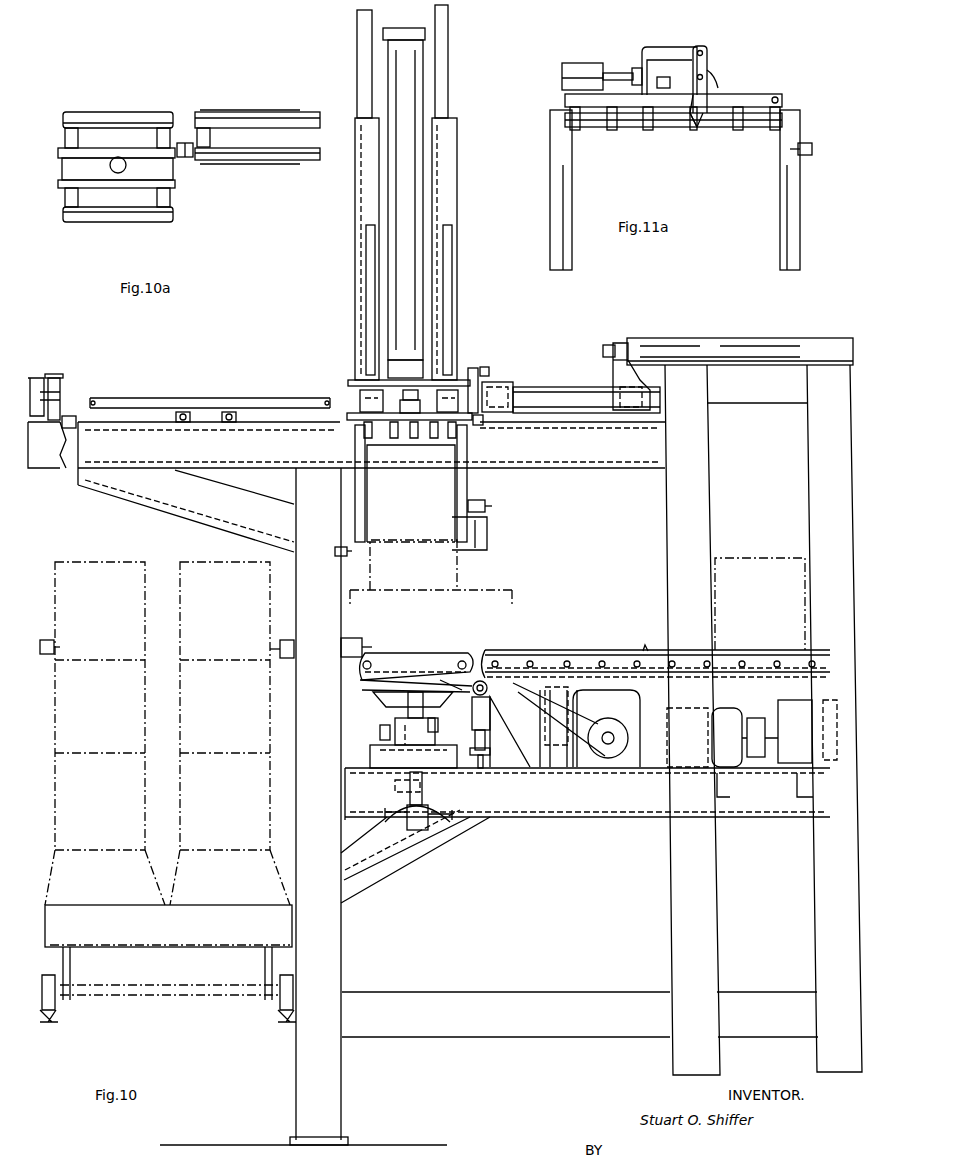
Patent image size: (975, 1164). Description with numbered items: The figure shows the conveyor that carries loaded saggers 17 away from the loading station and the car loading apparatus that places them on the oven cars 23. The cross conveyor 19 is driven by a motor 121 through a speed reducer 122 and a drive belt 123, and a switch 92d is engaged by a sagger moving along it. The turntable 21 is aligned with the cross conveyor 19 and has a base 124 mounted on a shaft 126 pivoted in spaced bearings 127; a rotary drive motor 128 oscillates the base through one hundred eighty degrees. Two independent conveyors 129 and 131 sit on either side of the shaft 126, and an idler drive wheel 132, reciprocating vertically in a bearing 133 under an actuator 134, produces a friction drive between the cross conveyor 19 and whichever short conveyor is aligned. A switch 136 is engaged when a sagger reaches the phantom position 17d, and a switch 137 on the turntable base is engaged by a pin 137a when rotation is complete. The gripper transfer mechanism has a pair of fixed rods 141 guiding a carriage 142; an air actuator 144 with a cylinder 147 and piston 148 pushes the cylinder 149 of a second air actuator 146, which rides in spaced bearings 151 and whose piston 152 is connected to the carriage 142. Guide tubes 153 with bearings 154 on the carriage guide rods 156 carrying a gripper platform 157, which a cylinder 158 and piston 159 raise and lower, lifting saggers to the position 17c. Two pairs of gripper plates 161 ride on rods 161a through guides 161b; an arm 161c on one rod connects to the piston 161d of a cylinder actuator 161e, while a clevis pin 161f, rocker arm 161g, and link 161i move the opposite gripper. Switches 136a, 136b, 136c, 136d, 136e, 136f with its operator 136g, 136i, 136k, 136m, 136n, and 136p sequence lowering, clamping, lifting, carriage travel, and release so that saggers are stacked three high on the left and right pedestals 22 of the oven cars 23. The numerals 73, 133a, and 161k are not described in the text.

In FIG. 10, the sagger 17 is at (752, 560).
In FIG. 10, the sagger raised position 17c is at (428, 523).
In FIG. 10, the sagger phantom position 17d is at (458, 575).
In FIG. 10a, the cross conveyor 19 is at (245, 125).
In FIG. 10, the cross conveyor 19 is at (572, 650).
In FIG. 10a, the turntable 21 is at (85, 228).
In FIG. 10, the turntable 21 is at (475, 652).
In FIG. 10, the pedestal 22 is at (178, 850).
In FIG. 10, the oven car 23 is at (153, 938).
In FIG. 10, the motor 73 is at (730, 710).
In FIG. 10, the switch 92d is at (646, 645).
In FIG. 10, the motor 121 is at (632, 702).
In FIG. 10, the speed reducer 122 is at (605, 758).
In FIG. 10, the drive belt 123 is at (588, 765).
In FIG. 10, the base 124 is at (382, 702).
In FIG. 10a, the shaft 126 is at (123, 165).
In FIG. 10, the shaft 126 is at (422, 795).
In FIG. 10, the bearings 127 is at (438, 725).
In FIG. 10, the rotary drive motor 128 is at (430, 812).
In FIG. 10a, the conveyor 129 is at (128, 150).
In FIG. 10a, the conveyor 131 is at (150, 182).
In FIG. 10, the conveyor 131 is at (358, 668).
In FIG. 10a, the idler drive wheel 132 is at (190, 160).
In FIG. 10, the idler drive wheel 132 is at (487, 690).
In FIG. 10, the bearing 133 is at (490, 712).
In FIG. 10, the beam 133a is at (347, 412).
In FIG. 10, the actuator 134 is at (490, 752).
In FIG. 10, the switch 136 is at (372, 648).
In FIG. 10, the switch 136a is at (335, 551).
In FIG. 11a, the switch 136b is at (665, 78).
In FIG. 10, the switch 136c is at (478, 425).
In FIG. 10, the switch 136d is at (47, 640).
In FIG. 10, the switch 136e is at (55, 378).
In FIG. 10, the switch 136f is at (486, 504).
In FIG. 10, the operator 136g is at (487, 536).
In FIG. 10, the switch 136i is at (76, 425).
In FIG. 10, the switch 136k is at (183, 422).
In FIG. 10, the switch 136m is at (232, 422).
In FIG. 10, the switch 136n is at (280, 645).
In FIG. 10, the switch 136p is at (489, 370).
In FIG. 10, the switch 137 is at (380, 735).
In FIG. 10, the pin 137a is at (460, 688).
In FIG. 10, the fixed rods 141 is at (178, 398).
In FIG. 10, the carriage 142 is at (346, 383).
In FIG. 10, the air actuator 144 is at (762, 338).
In FIG. 10, the air actuator 146 is at (560, 385).
In FIG. 10, the cylinder 147 is at (690, 338).
In FIG. 10, the piston 148 is at (626, 343).
In FIG. 10, the cylinder 149 is at (592, 385).
In FIG. 10, the bearings 151 is at (520, 414).
In FIG. 10, the piston 152 is at (497, 385).
In FIG. 10, the guide tubes 153 is at (457, 162).
In FIG. 10, the bearings 154 is at (360, 120).
In FIG. 10, the rod 156 is at (357, 48).
In FIG. 11a, the gripper platform 157 is at (779, 98).
In FIG. 10, the gripper platform 157 is at (350, 414).
In FIG. 10, the cylinder 158 is at (423, 102).
In FIG. 10, the piston 159 is at (405, 425).
In FIG. 11a, the gripper plates 161 is at (790, 135).
In FIG. 10, the gripper plates 161 is at (354, 482).
In FIG. 11a, the rods 161a is at (612, 130).
In FIG. 11a, the guides 161b is at (610, 130).
In FIG. 11a, the arm 161c is at (650, 110).
In FIG. 11a, the piston 161d is at (618, 70).
In FIG. 11a, the cylinder actuator 161e is at (570, 63).
In FIG. 11a, the clevis pin 161f is at (697, 130).
In FIG. 11a, the rocker arm 161g is at (700, 97).
In FIG. 11a, the link 161i is at (705, 53).
In FIG. 11a, the spring 161k is at (707, 77).